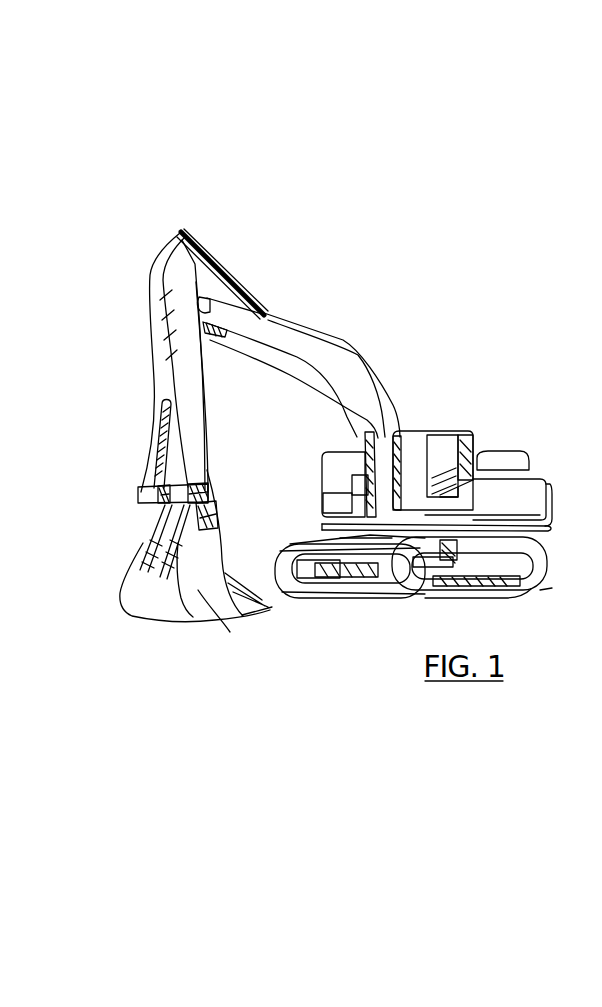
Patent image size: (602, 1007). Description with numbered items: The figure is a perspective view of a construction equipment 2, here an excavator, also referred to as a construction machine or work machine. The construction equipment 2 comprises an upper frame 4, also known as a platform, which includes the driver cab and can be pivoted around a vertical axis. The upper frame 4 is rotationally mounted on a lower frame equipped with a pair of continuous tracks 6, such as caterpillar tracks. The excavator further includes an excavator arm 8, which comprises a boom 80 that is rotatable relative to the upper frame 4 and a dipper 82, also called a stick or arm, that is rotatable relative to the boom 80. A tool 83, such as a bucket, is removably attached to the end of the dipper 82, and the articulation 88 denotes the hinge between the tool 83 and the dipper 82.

The construction equipment 2 is at (293, 728).
The upper frame 4 is at (440, 425).
The continuous tracks 6 is at (545, 564).
The excavator arm 8 is at (233, 100).
The boom 80 is at (310, 344).
The dipper 82 is at (182, 371).
The tool 83 is at (224, 618).
The articulation 88 is at (207, 492).